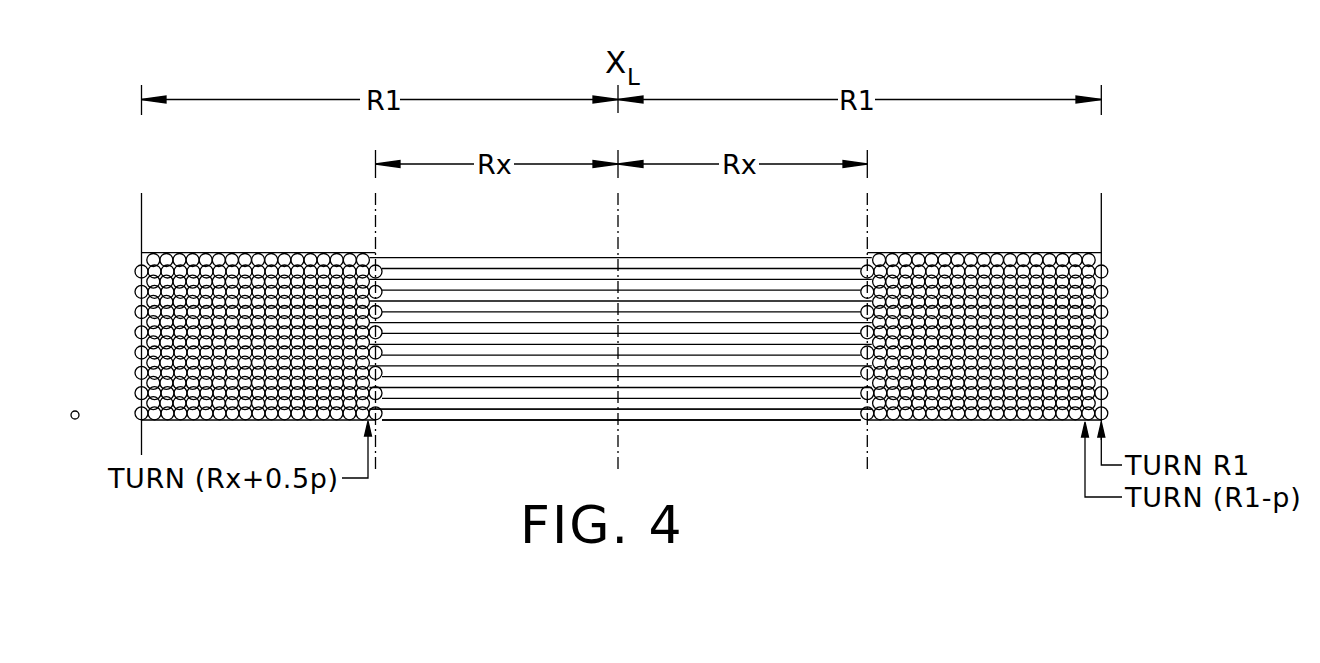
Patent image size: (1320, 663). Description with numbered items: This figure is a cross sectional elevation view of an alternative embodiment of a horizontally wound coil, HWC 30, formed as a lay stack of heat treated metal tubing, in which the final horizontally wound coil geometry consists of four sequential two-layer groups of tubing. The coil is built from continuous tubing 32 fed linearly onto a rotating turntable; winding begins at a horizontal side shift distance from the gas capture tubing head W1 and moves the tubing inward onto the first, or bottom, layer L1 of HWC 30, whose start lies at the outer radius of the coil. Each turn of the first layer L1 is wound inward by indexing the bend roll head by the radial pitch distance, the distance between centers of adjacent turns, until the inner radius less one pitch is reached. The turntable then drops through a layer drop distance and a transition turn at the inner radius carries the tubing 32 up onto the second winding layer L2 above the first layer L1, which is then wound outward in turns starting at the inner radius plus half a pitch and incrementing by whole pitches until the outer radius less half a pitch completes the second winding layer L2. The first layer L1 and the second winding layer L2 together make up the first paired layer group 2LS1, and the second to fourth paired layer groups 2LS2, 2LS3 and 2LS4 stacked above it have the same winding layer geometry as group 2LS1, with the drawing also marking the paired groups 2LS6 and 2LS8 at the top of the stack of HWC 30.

The horizontally wound coil (HWC) 30 is at (1198, 204).
The continuous tubing 32 is at (232, 421).
The gas capture tubing head W1 is at (72, 411).
The first layer L1 is at (1114, 415).
The second winding layer L2 is at (1114, 405).
The first two-layer group 2LS1 is at (1208, 397).
The second two-layer group 2LS2 is at (1128, 378).
The third two-layer group 2LS3 is at (1210, 315).
The fourth two-layer group 2LS4 is at (1117, 337).
The layer set 6 2LS6 is at (1117, 295).
The layer set 8 2LS8 is at (1117, 253).